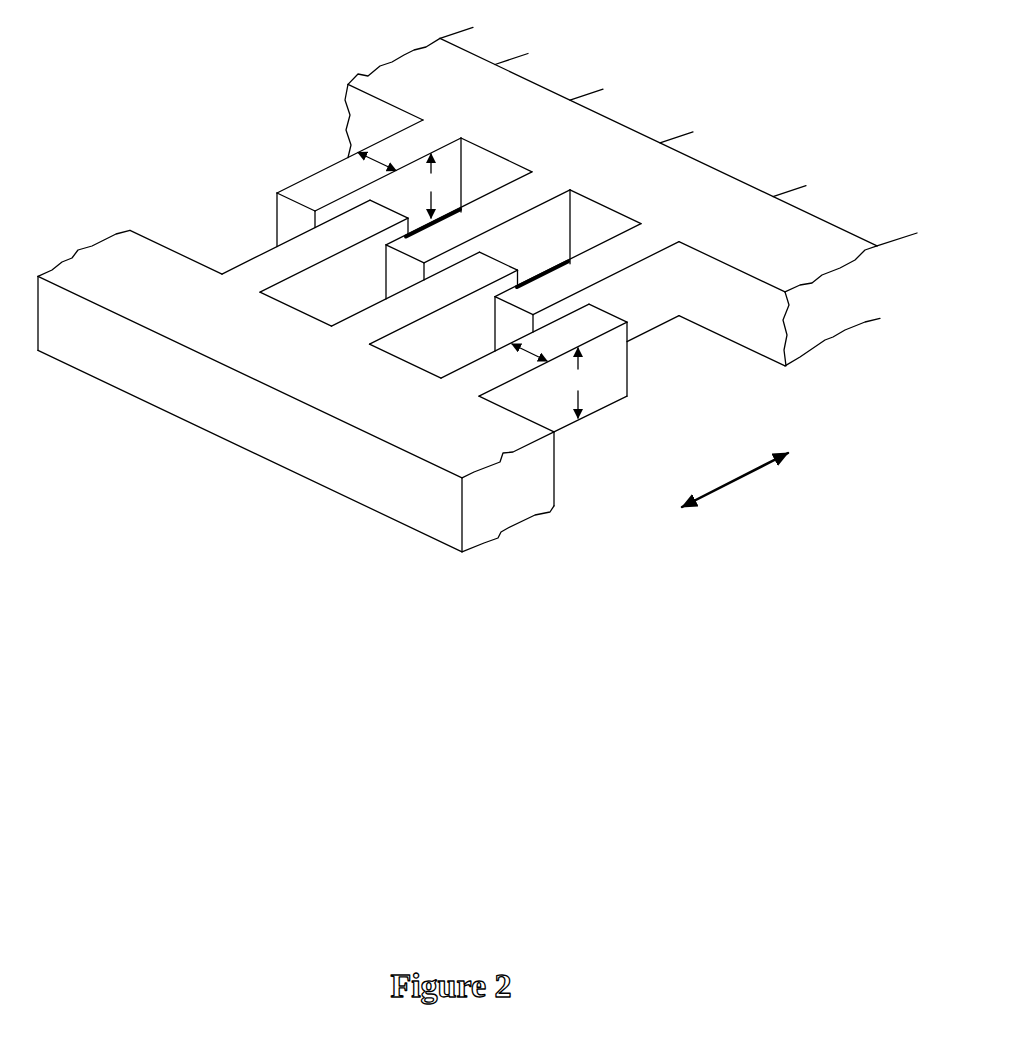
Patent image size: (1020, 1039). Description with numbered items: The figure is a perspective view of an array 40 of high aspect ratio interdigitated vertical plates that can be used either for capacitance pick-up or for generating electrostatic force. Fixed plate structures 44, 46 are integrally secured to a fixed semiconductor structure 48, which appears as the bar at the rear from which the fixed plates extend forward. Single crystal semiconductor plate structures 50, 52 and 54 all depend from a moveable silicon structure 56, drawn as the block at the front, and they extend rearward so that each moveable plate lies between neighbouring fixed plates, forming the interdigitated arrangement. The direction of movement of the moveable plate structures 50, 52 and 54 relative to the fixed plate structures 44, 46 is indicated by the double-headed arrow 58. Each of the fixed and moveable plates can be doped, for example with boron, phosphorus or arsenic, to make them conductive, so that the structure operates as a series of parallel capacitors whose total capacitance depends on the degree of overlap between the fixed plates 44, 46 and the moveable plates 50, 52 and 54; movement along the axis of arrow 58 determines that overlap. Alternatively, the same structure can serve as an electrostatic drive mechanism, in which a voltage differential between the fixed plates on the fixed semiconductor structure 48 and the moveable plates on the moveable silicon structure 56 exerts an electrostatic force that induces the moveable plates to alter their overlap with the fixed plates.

The array of interdigitated plate structures 40 is at (237, 167).
The fixed plate structure 44 is at (497, 184).
The fixed plate structure 46 is at (610, 234).
The fixed semiconductor structure 48 is at (790, 288).
The single crystal semiconductor plate structure 50 is at (302, 276).
The single crystal semiconductor plate structure 52 is at (410, 333).
The single crystal semiconductor plate structure 54 is at (583, 310).
The moveable silicon structure 56 is at (390, 497).
The arrow 58 is at (738, 478).